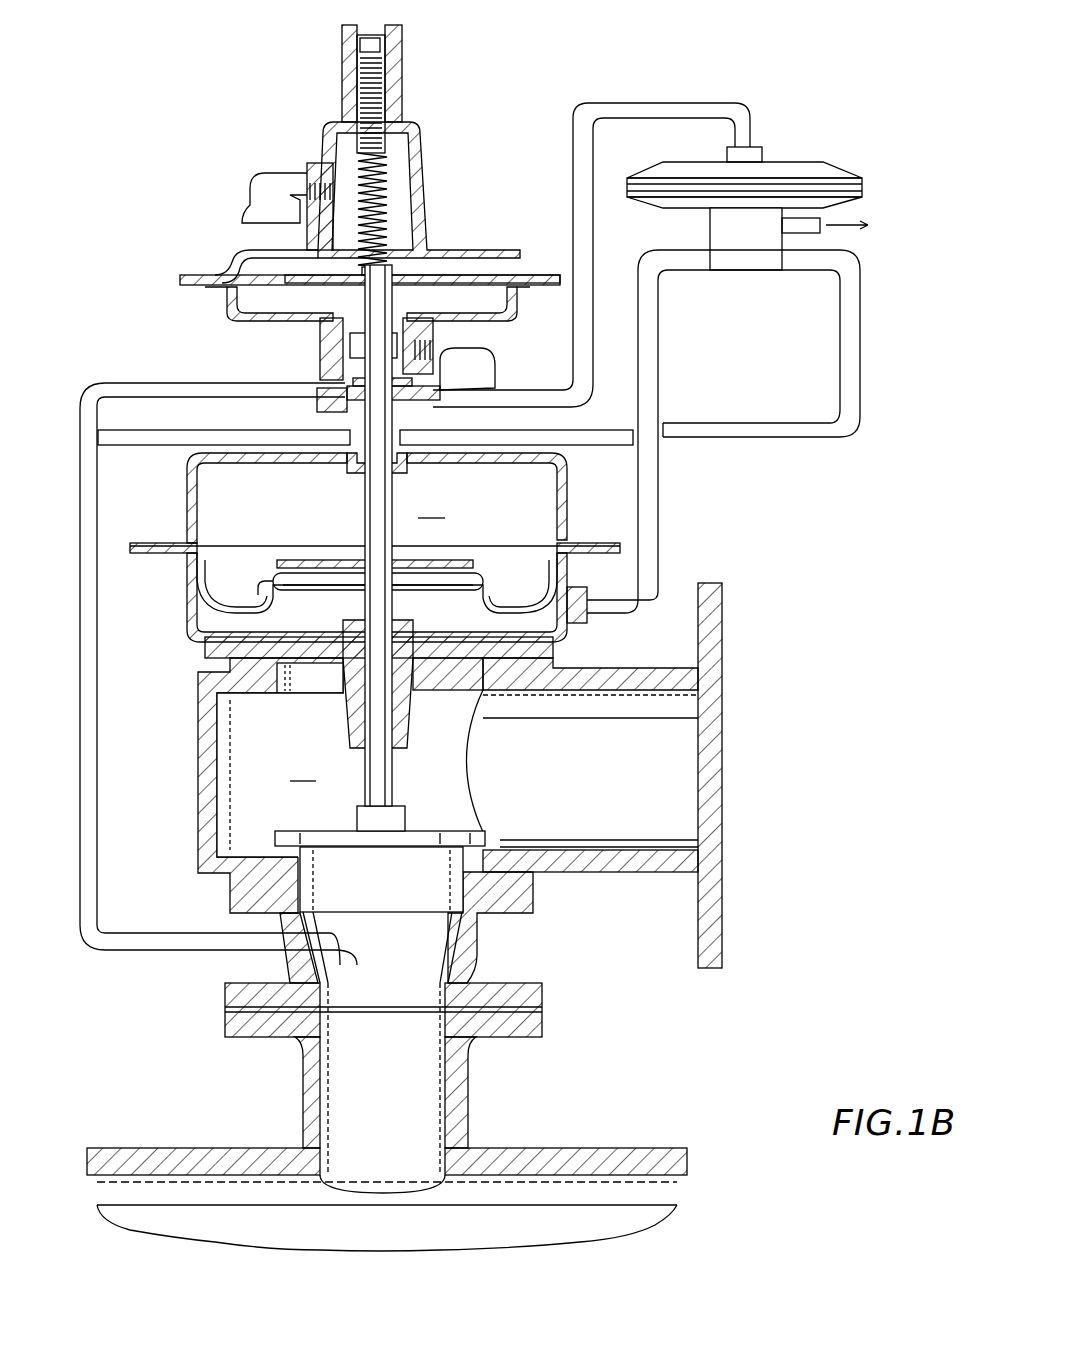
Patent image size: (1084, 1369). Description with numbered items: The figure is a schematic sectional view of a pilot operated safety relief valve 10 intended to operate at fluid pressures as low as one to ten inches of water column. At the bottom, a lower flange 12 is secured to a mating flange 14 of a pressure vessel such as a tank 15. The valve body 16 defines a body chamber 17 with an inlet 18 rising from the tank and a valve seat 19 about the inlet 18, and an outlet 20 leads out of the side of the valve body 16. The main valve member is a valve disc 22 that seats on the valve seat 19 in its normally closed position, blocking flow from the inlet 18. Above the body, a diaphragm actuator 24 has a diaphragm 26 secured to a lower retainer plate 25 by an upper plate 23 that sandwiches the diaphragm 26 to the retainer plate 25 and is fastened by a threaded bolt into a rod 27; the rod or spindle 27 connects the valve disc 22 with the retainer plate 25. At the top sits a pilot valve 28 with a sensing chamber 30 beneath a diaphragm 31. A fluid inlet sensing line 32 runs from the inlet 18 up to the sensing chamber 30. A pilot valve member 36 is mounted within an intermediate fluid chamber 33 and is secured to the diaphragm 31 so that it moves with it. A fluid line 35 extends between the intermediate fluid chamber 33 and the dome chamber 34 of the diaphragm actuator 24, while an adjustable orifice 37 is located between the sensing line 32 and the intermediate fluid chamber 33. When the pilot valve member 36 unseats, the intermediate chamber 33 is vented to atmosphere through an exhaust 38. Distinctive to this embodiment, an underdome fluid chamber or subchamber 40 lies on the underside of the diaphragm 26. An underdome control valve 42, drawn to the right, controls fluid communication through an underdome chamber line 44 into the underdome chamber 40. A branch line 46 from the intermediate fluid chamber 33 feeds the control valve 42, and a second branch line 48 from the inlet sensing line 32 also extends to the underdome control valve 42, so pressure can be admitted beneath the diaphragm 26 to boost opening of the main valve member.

The pilot operated safety relief valve 10 is at (760, 578).
The lower flange 12 is at (528, 983).
The mating flange 14 is at (543, 1022).
The tank 15 is at (258, 1148).
The valve body 16 is at (198, 815).
The body chamber 17 is at (280, 775).
The inlet 18 is at (430, 945).
The valve seat 19 is at (462, 855).
The outlet 20 is at (705, 740).
The valve disc 22 is at (485, 835).
The upper plate 23 is at (352, 560).
The diaphragm actuator 24 is at (570, 462).
The lower retainer plate 25 is at (322, 590).
The diaphragm 26 is at (287, 560).
The rod 27 is at (393, 785).
The pilot valve 28 is at (441, 100).
The sensing chamber 30 is at (258, 298).
The diaphragm 31 is at (250, 268).
The fluid inlet sensing line 32 is at (100, 716).
The intermediate fluid chamber 33 is at (425, 383).
The dome chamber 34 is at (375, 553).
The fluid line 35 is at (357, 455).
The pilot valve member 36 is at (349, 350).
The adjustable orifice 37 is at (340, 395).
The exhaust 38 is at (492, 373).
The underdome chamber 40 is at (480, 615).
The underdome control valve 42 is at (852, 148).
The underdome chamber line 44 is at (657, 318).
The branch line 46 is at (755, 130).
The branch line 48 is at (148, 445).